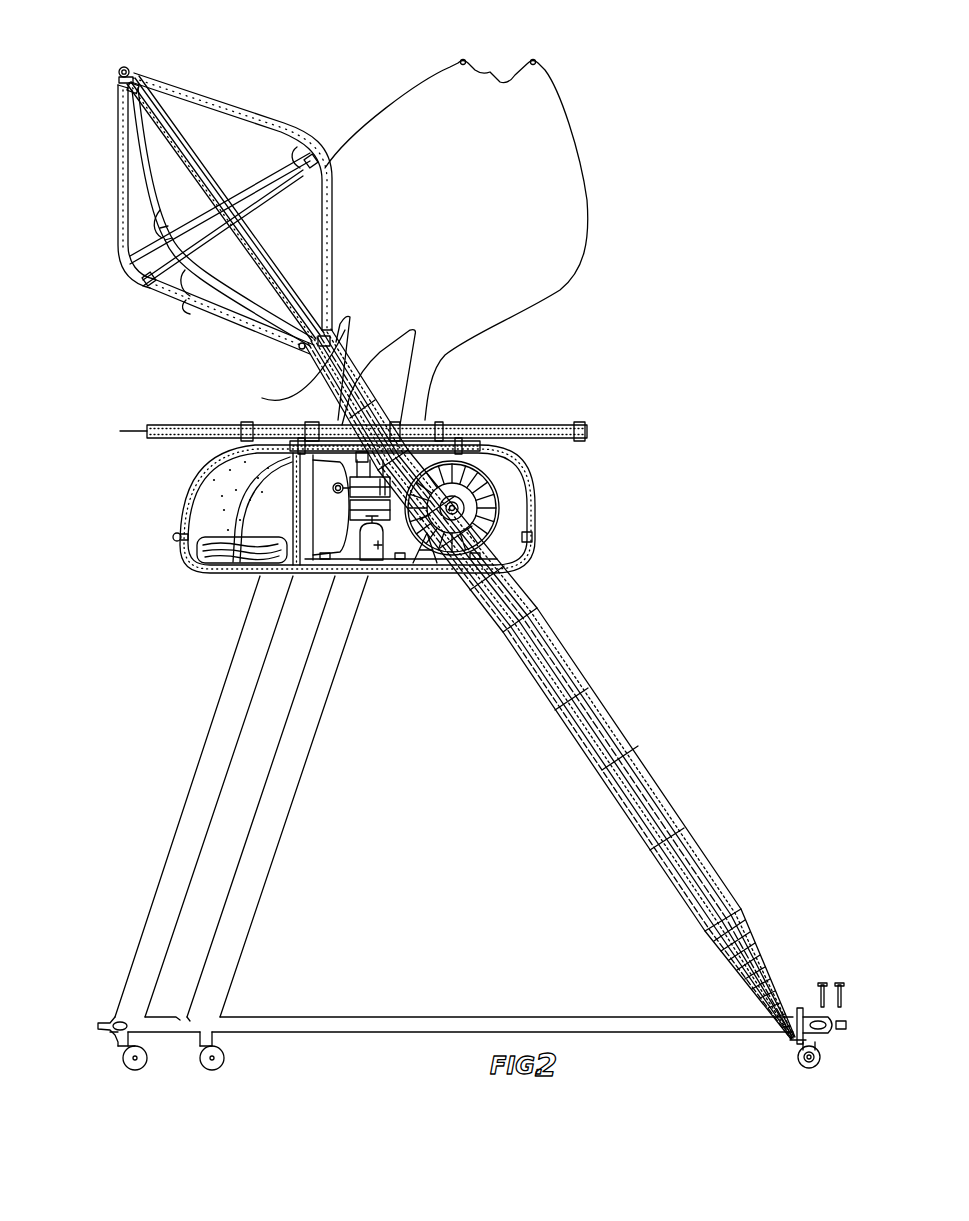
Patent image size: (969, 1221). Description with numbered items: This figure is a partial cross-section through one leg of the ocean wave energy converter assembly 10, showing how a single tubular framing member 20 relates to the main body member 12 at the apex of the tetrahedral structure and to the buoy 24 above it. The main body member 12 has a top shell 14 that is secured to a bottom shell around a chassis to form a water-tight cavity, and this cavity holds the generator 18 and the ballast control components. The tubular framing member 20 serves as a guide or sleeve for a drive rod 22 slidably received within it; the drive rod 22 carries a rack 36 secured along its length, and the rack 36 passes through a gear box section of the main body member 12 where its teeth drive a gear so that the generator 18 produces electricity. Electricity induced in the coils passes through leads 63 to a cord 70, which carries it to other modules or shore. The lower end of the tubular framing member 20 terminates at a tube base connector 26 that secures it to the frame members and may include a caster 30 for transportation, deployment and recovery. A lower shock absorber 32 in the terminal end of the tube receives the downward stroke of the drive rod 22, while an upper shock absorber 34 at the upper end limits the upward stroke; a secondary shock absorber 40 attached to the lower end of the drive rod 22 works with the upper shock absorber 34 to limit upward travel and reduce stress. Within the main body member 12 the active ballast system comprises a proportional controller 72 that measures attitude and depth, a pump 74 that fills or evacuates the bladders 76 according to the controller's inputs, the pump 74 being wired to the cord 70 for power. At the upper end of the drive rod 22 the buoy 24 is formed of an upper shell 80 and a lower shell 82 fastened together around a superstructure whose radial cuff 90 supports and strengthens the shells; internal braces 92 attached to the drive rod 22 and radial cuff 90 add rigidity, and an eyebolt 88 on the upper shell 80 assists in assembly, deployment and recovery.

The ocean wave energy converter assembly 10 is at (696, 282).
The main body member 12 is at (180, 497).
The top shell 14 is at (177, 534).
The generator 18 is at (490, 486).
The tubular framing member 20 is at (557, 698).
The drive rod 22 is at (160, 108).
The buoy 24 is at (108, 217).
The tube base connector 26 is at (813, 1036).
The caster 30 is at (798, 1060).
The lower shock absorber 32 is at (787, 980).
The upper shock absorber 34 is at (527, 612).
The rack 36 is at (586, 712).
The secondary shock absorber 40 is at (757, 928).
The leads 63 is at (362, 462).
The cord 70 is at (580, 426).
The proportional controller 72 is at (350, 510).
The pump 74 is at (378, 548).
The bladder 76 is at (227, 563).
The upper shell 80 is at (118, 150).
The lower shell 82 is at (213, 324).
The eyebolt 88 is at (123, 66).
The radial cuff 90 is at (281, 163).
The internal brace 92 is at (312, 162).